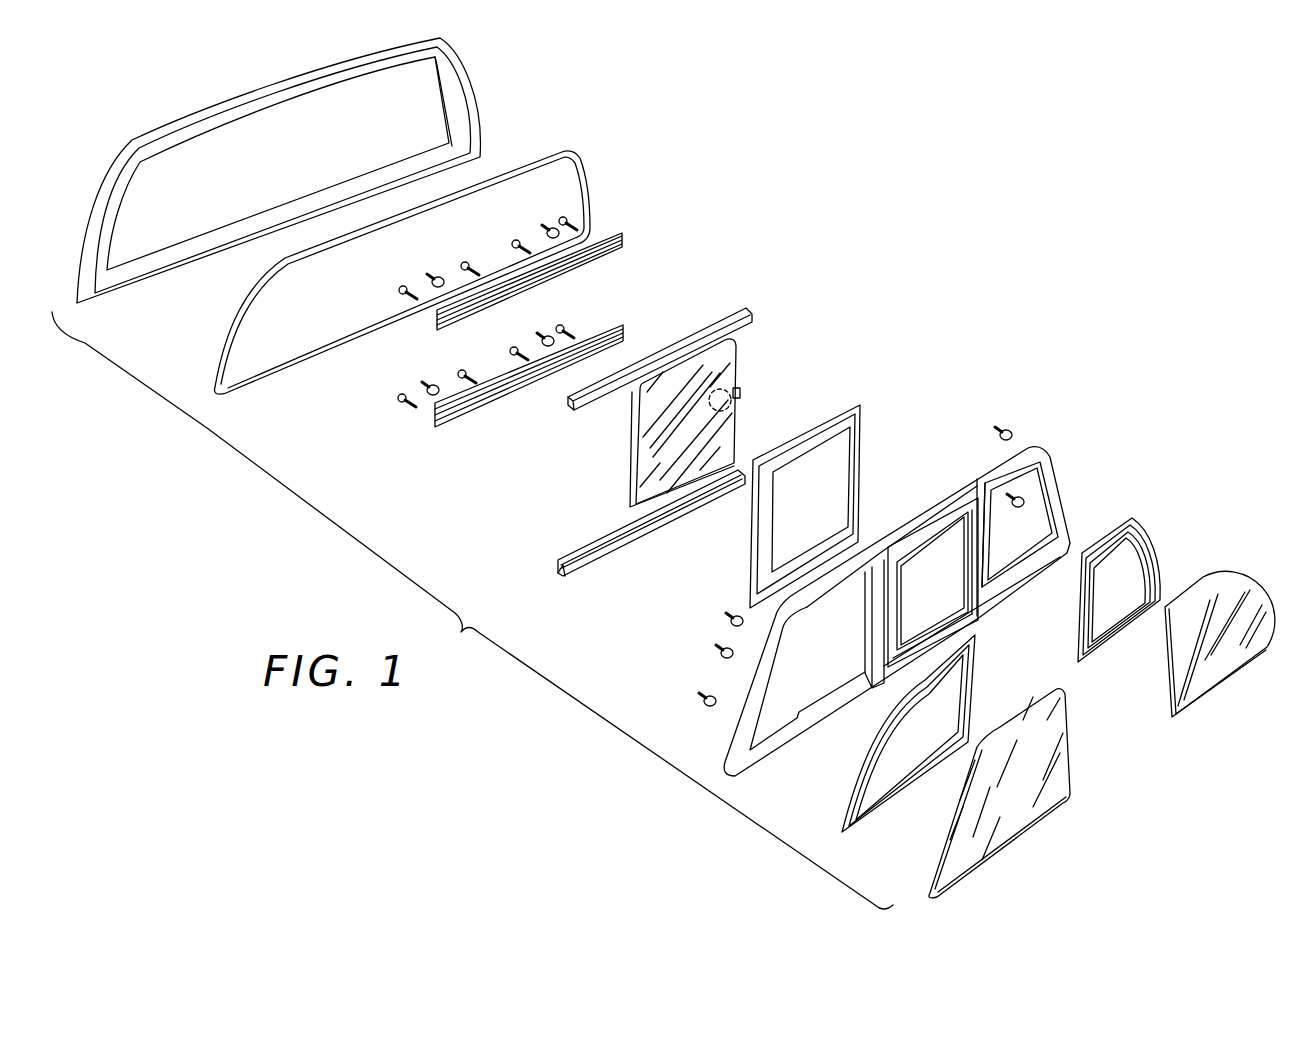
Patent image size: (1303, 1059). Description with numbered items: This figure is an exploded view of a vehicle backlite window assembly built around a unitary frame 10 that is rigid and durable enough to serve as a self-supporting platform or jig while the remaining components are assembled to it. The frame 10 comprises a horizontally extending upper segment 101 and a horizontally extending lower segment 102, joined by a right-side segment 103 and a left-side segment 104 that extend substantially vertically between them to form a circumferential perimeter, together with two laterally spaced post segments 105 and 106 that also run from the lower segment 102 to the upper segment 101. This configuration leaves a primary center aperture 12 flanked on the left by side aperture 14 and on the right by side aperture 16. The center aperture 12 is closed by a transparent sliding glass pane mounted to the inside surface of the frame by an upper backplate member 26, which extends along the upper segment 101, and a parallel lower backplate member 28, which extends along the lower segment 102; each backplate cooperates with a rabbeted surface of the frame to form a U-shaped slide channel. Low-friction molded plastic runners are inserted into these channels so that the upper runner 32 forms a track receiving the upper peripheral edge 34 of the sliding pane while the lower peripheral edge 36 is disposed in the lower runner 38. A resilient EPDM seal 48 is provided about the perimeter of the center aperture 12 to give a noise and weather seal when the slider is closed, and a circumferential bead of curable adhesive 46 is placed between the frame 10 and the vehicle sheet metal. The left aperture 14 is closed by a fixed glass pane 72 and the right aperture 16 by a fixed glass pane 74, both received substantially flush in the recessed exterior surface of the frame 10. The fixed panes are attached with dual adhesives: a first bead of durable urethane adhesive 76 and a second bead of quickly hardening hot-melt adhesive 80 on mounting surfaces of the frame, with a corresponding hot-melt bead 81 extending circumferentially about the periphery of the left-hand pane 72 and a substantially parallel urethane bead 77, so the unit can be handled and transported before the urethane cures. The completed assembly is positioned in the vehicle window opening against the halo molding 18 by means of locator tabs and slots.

The frame 10 is at (897, 593).
The primary aperture 12 is at (910, 562).
The left side aperture 14 is at (777, 669).
The right side aperture 16 is at (1047, 523).
The halo molding 18 is at (282, 87).
The upper backplate member 26 is at (617, 233).
The lower backplate member 28 is at (610, 327).
The upper runner 32 is at (731, 311).
The upper peripheral edge 34 is at (739, 347).
The lower peripheral edge 36 is at (672, 500).
The lower runner 38 is at (651, 531).
The bead of curable adhesive 46 is at (562, 153).
The resilient seal 48 is at (865, 427).
The fixed glass pane 72 is at (1066, 797).
The fixed glass pane 74 is at (1245, 600).
The first bead of adhesive 76 is at (1165, 531).
The urethane adhesive bead 77 is at (893, 733).
The second bead of hot melt adhesive 80 is at (1138, 587).
The bead of hot melt adhesive 81 is at (850, 785).
The upper segment 101 is at (927, 573).
The lower segment 102 is at (988, 614).
The right-side segment 103 is at (1065, 492).
The left-side segment 104 is at (737, 733).
The post segment 105 is at (975, 530).
The post segment 106 is at (913, 625).